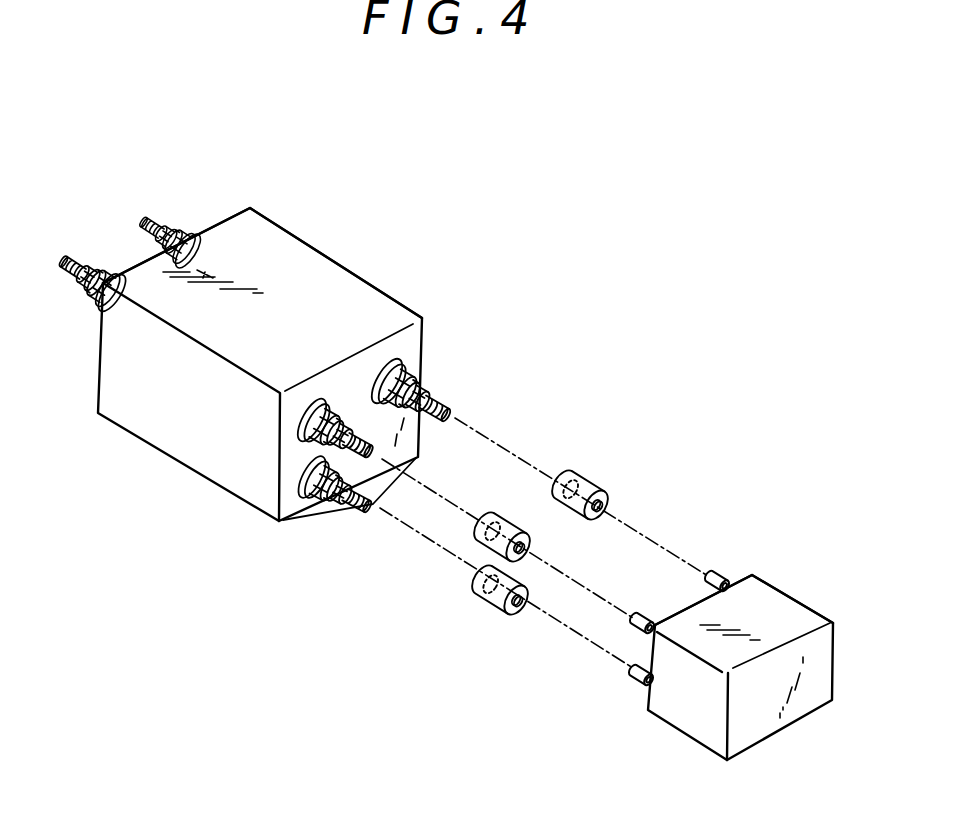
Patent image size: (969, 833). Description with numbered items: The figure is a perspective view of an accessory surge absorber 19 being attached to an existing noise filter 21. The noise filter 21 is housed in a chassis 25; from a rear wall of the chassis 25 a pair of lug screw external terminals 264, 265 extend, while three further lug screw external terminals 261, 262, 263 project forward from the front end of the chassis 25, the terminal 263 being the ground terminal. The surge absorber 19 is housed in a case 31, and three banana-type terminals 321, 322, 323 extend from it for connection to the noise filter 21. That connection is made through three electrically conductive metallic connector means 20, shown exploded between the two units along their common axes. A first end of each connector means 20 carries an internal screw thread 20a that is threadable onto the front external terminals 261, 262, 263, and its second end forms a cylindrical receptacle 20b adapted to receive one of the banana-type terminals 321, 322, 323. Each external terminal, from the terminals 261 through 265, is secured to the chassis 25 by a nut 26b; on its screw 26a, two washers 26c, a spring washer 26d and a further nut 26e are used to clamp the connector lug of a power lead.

The surge absorber 19 is at (670, 733).
The connector means 20 is at (520, 528).
The internal screw thread 20a is at (485, 594).
The cylindrical receptacle 20b is at (518, 618).
The noise filter 21 is at (140, 447).
The chassis 25 is at (311, 265).
The screw 26a is at (458, 415).
The nut 26b is at (386, 358).
The washers 26c is at (428, 385).
The spring washer 26d is at (440, 395).
The nut 26e is at (446, 405).
The lug screw external terminal 261 is at (417, 357).
The lug screw external terminal 262 is at (288, 441).
The lug screw external terminal 263 is at (358, 518).
The lug screw external terminal 264 is at (65, 250).
The lug screw external terminal 265 is at (143, 215).
The case 31 is at (758, 590).
The banana-type terminal 321 is at (711, 575).
The banana-type terminal 322 is at (645, 615).
The banana-type terminal 323 is at (642, 667).